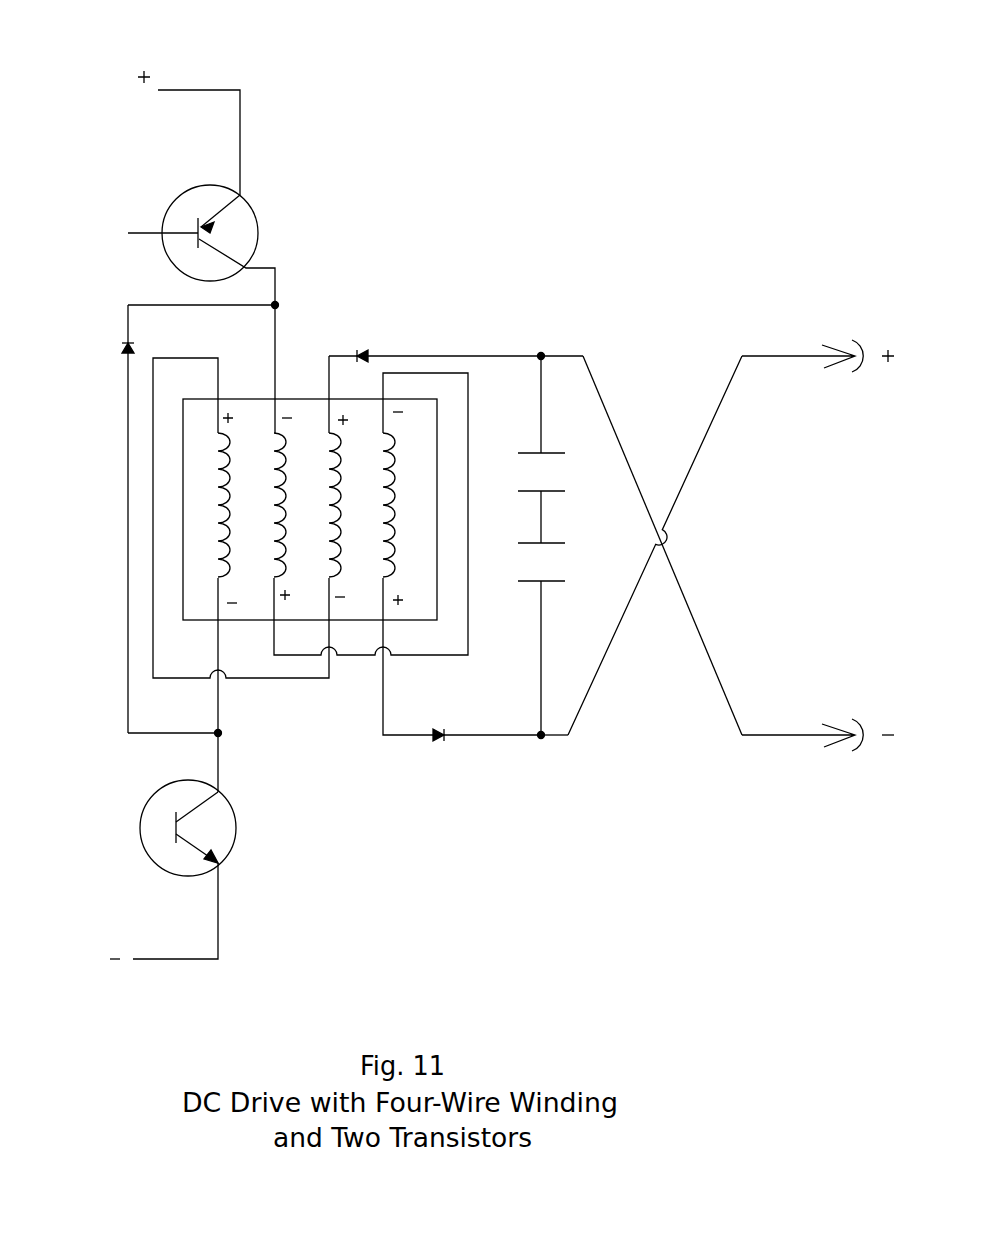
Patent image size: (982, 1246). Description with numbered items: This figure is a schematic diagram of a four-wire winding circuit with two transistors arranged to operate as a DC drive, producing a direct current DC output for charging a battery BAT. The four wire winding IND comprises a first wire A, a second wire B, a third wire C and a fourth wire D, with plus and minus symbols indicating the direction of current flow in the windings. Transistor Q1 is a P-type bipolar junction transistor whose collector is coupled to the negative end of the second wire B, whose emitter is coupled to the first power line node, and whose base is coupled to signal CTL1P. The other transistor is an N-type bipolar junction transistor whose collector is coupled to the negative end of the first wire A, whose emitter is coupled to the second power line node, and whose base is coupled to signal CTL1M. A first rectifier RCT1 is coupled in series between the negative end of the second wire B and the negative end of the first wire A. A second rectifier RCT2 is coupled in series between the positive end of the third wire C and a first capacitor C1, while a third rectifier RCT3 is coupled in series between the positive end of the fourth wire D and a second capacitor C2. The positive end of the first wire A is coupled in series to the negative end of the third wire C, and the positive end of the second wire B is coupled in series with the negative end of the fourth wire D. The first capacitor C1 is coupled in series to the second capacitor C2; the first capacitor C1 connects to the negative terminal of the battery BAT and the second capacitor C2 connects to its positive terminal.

The direct current DC is at (175, 490).
The transistor Q1 is at (228, 245).
The signal CTL1P is at (125, 235).
The first rectifier RCT1 is at (94, 519).
The four wire winding IND is at (347, 574).
The first wire A is at (241, 575).
The second wire B is at (360, 514).
The third wire C is at (329, 476).
The fourth wire D is at (452, 573).
The second rectifier RCT2 is at (456, 343).
The third rectifier RCT3 is at (487, 752).
The first capacitor C1 is at (526, 449).
The second capacitor C2 is at (526, 639).
The battery BAT is at (731, 545).
The signal CTL1M is at (176, 828).